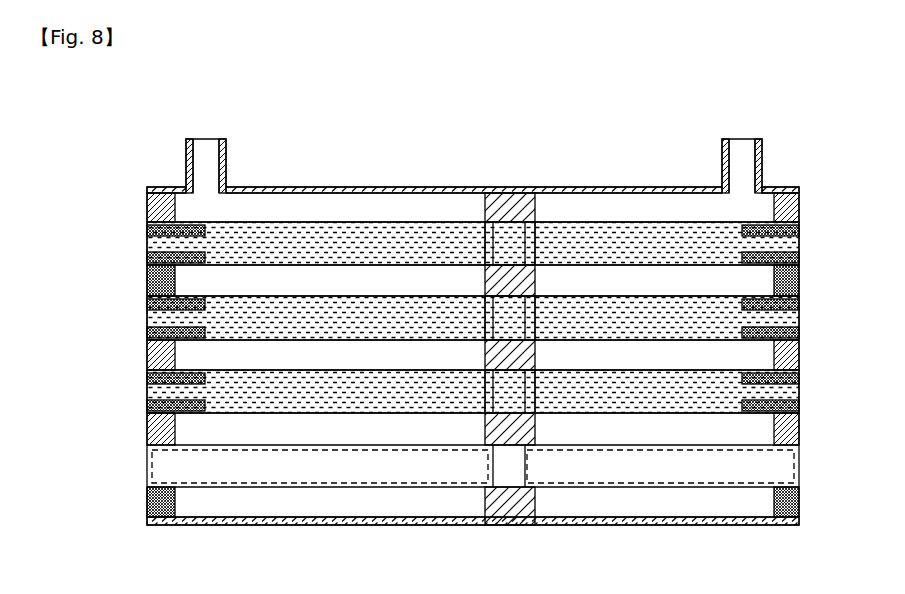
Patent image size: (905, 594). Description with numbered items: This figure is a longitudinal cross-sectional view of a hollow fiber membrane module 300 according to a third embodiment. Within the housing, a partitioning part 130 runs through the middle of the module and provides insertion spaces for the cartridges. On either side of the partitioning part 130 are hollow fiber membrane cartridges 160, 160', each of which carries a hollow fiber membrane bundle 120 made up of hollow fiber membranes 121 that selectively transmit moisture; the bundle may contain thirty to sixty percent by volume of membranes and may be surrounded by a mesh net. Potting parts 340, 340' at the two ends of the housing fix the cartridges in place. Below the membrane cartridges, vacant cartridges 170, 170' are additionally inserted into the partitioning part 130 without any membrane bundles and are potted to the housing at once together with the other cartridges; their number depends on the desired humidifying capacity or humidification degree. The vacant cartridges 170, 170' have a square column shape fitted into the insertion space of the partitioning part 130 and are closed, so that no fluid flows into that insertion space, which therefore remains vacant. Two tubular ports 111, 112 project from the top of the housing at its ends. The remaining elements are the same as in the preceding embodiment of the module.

The hollow fiber membrane module 300 is at (478, 336).
The inlet tube 111 is at (187, 163).
The outlet tube 112 is at (758, 168).
The potting part 340 is at (132, 334).
The potting part 340' is at (820, 337).
The hollow fiber membrane cartridge 160 is at (316, 274).
The hollow fiber membrane cartridge 160' is at (667, 271).
The hollow fiber membrane bundle 120 is at (486, 236).
The hollow fiber membrane 121 is at (505, 240).
The partitioning part 130 is at (532, 285).
The vacant cartridge 170 is at (320, 516).
The vacant cartridge 170' is at (660, 516).